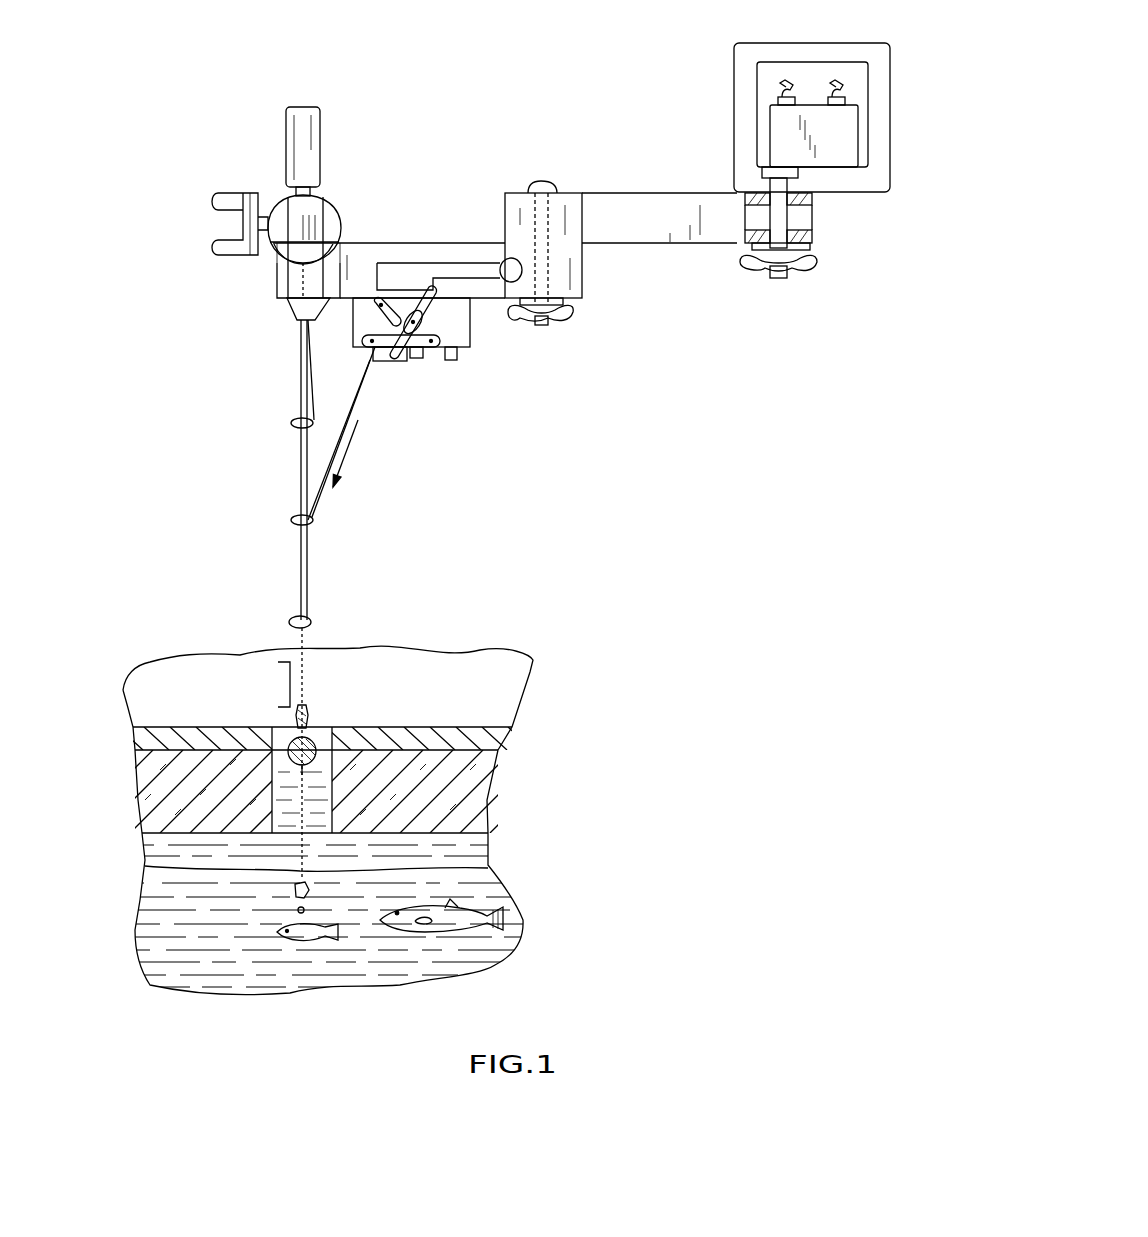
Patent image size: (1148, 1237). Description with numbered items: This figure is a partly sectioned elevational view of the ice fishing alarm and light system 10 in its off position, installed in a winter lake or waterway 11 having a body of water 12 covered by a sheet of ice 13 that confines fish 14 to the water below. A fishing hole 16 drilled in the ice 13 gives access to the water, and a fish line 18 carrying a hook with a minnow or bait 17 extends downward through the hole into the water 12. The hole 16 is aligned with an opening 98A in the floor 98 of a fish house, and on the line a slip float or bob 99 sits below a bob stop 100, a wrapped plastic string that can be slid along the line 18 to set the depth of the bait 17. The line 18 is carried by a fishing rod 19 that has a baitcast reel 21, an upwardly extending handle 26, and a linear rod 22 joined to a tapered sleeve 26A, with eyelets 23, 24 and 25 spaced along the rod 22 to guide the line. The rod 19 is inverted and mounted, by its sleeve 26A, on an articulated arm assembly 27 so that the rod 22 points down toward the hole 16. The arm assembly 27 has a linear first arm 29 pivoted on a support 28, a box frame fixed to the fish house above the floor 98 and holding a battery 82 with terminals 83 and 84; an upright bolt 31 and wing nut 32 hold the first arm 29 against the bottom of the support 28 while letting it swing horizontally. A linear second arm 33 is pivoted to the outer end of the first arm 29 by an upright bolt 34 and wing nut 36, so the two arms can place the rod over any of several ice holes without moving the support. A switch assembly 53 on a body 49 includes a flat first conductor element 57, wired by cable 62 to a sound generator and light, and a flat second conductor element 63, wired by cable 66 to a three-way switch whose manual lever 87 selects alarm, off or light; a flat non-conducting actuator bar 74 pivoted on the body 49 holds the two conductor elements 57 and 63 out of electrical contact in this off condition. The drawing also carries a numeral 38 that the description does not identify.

The ice fishing alarm and light system 10 is at (485, 95).
The lakes and waterways 11 is at (523, 840).
The body of water 12 is at (478, 890).
The sheet of ice 13 is at (467, 790).
The fish 14 is at (450, 937).
The fishing hole 16 is at (325, 725).
The minnow or bait 17 is at (275, 942).
The fish line 18 is at (175, 868).
The fishing rod 19 is at (268, 150).
The baitcast reel 21 is at (333, 218).
The linear rod 22 is at (300, 367).
The eyelet 23 is at (295, 428).
The eyelet 24 is at (295, 522).
The eyelet 25 is at (290, 622).
The handle 26 is at (310, 135).
The tapered sleeve 26A is at (293, 317).
The articulated arm assembly 27 is at (648, 296).
The support 28 is at (733, 115).
The first arm 29 is at (612, 200).
The upright bolt 31 is at (780, 212).
The wing nut 32 is at (808, 278).
The second arm 33 is at (400, 245).
The upright bolt 34 is at (585, 275).
The wing nut 36 is at (570, 320).
The housing block 38 is at (285, 288).
The body 49 is at (455, 335).
The switch assembly 53 is at (385, 372).
The first conductor element 57 is at (378, 317).
The electric conductor cable 62 is at (456, 262).
The second conductor element 63 is at (468, 320).
The electric conductor cable 66 is at (475, 300).
The actuator bar 74 is at (428, 350).
The battery 82 is at (848, 135).
The electric terminal 83 is at (783, 68).
The ground terminal 84 is at (838, 68).
The manual lever 87 is at (451, 360).
The fish house floor 98 is at (497, 737).
The opening 98A is at (287, 730).
The slip float or bob 99 is at (318, 770).
The bob stop 100 is at (303, 705).